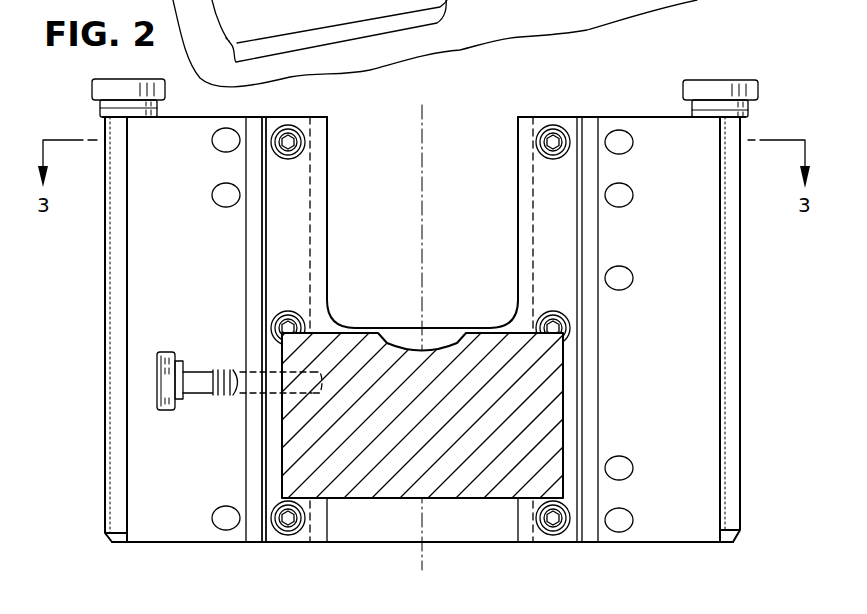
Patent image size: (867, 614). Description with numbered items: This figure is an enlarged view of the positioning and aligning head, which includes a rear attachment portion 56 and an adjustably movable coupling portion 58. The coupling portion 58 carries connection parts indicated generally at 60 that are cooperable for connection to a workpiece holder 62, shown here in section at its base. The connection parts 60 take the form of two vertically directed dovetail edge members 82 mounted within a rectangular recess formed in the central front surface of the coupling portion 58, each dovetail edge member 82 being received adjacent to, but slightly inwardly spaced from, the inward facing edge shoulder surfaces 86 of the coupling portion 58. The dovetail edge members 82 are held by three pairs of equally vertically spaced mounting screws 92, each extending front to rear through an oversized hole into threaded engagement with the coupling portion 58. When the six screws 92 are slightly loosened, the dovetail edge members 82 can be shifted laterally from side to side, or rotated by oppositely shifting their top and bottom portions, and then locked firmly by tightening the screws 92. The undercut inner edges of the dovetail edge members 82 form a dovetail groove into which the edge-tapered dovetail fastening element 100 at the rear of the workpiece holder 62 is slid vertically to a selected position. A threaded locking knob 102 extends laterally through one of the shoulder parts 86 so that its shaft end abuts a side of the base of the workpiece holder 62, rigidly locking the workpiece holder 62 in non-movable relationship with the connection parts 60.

The rear attachment portion 56 is at (103, 254).
The adjustably movable coupling portion 58 is at (162, 288).
The connection portion 60 is at (303, 180).
The workpiece holder 62 is at (456, 507).
The dovetail edge member 82 is at (283, 250).
The inward facing edge shoulder surface 86 is at (272, 170).
The mounting screw 92 is at (297, 130).
The dovetail-cooperable fastening element 100 is at (350, 498).
The locking knob 102 is at (158, 390).